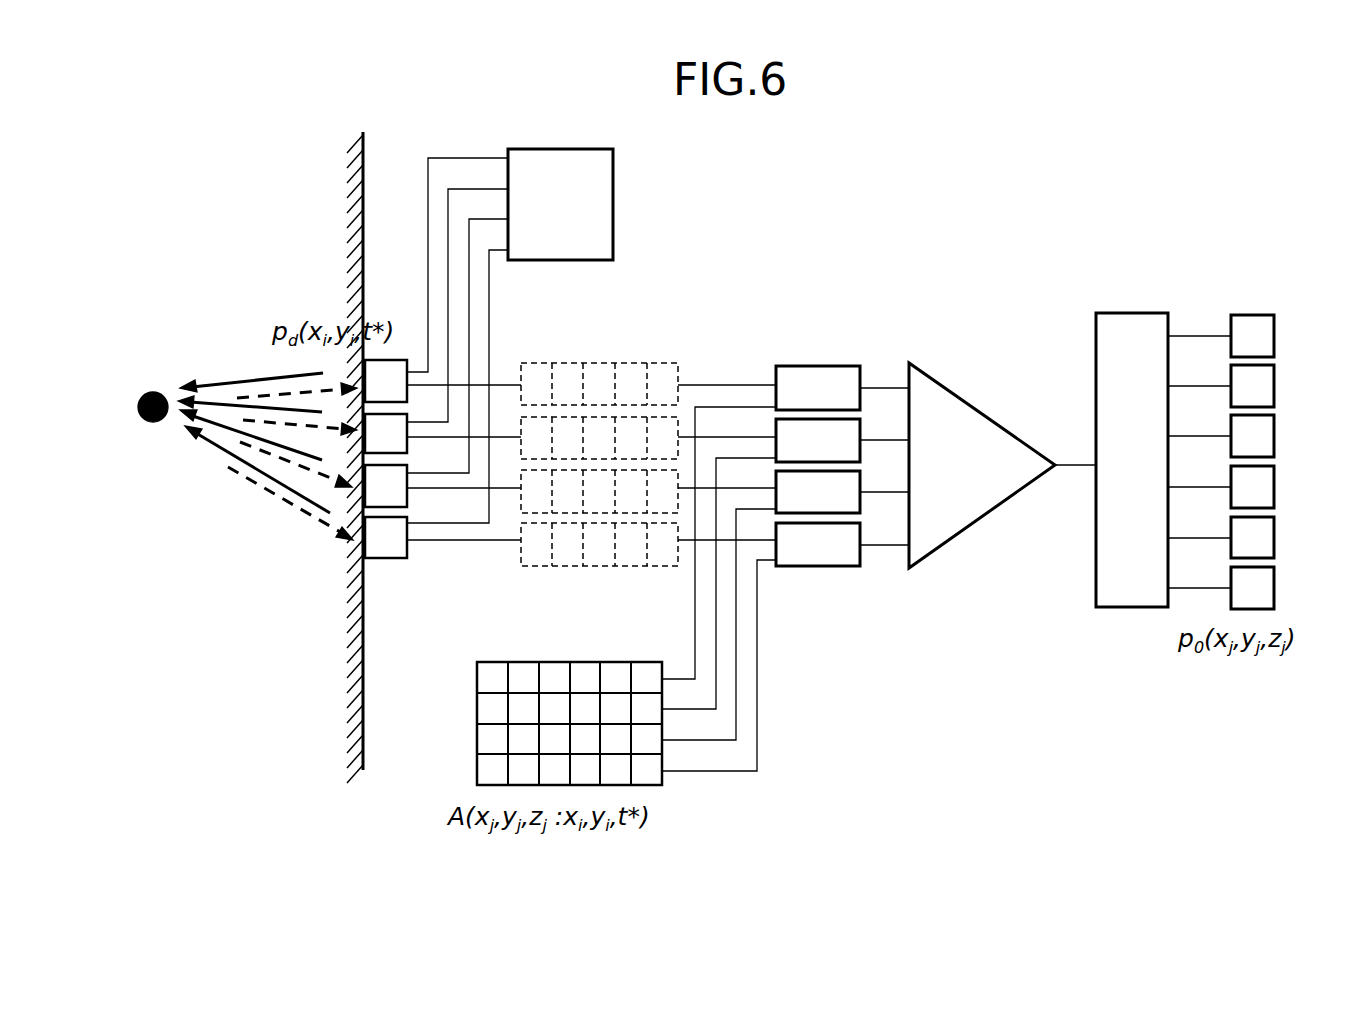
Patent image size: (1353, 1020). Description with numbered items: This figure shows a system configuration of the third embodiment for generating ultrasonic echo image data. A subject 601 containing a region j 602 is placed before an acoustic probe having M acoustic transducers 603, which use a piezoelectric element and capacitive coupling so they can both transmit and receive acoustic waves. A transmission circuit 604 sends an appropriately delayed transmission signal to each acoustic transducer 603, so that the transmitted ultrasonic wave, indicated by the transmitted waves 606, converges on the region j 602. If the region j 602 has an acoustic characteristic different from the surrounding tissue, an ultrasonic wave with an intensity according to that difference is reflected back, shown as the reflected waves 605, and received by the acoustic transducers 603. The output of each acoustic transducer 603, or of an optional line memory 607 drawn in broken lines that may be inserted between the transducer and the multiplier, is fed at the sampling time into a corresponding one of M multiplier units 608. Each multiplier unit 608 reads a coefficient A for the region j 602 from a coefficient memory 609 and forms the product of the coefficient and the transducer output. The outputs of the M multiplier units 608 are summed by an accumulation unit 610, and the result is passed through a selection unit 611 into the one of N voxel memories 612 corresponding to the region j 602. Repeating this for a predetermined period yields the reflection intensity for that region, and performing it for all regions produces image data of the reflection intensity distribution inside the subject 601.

The subject 601 is at (283, 188).
The region j 602 is at (153, 392).
The acoustic transducer 603 is at (387, 560).
The transmission circuit 604 is at (613, 183).
The received signals 605 is at (238, 380).
The transmitted signals 606 is at (262, 480).
The line memory 607 is at (623, 362).
The multiplier unit 608 is at (820, 366).
The coefficient memory 609 is at (515, 662).
The accumulation unit 610 is at (938, 378).
The selection unit 611 is at (1127, 313).
The voxel memory 612 is at (1250, 313).